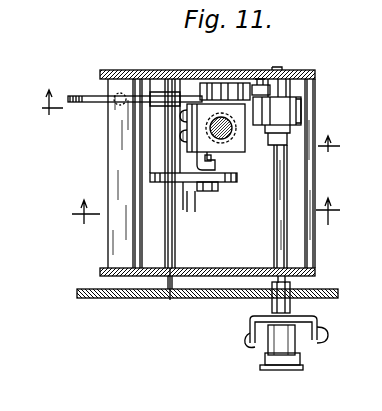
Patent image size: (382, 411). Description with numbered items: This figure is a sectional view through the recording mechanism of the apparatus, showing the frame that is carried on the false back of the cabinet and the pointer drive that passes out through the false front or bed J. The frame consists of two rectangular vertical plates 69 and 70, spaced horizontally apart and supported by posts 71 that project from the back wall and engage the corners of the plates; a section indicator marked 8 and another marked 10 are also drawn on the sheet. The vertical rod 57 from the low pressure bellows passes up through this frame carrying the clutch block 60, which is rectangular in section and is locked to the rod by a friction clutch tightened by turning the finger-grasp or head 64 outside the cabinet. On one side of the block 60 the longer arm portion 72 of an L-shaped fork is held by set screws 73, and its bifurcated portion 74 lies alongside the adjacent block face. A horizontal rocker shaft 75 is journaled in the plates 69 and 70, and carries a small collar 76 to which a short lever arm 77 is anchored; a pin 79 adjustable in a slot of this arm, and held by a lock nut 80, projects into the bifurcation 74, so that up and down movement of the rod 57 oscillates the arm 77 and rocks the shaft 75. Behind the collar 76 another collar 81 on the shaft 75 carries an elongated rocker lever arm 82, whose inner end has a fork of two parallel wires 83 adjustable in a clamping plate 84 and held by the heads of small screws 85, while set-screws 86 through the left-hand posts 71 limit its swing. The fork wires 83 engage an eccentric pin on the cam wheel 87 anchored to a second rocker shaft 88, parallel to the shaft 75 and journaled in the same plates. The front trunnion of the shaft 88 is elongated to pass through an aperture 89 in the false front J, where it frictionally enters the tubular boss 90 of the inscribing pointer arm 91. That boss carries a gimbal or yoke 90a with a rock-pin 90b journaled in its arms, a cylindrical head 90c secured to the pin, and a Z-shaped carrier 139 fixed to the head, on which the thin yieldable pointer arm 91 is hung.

The rear vertical plate 70 is at (123, 62).
The front vertical plate 69 is at (222, 277).
The false front or bed J is at (121, 300).
The posts 71 is at (114, 254).
The longer arm portion of L-shaped fork 72 is at (157, 167).
The set screws 73 is at (132, 118).
The collar 76 is at (153, 172).
The bifurcated portion of fork 74 is at (210, 192).
The short lever arm 77 is at (180, 182).
The lock nut 80 is at (188, 192).
The pin 79 is at (196, 192).
The rod 57 is at (217, 165).
The finger-grasp or head 64 is at (243, 139).
The clutch block 60 is at (236, 134).
The rocker lever arm 82 is at (80, 96).
The collar 81 is at (158, 143).
The screws 85 is at (207, 83).
The clamping plate 84 is at (233, 84).
The fork wires 83 is at (260, 83).
The set-screws 86 is at (290, 68).
The cam wheel 87 is at (301, 100).
The rocker shaft 88 is at (280, 188).
The rocker shaft 75 is at (170, 299).
The tubular boss 90 is at (271, 302).
The aperture 89 is at (294, 302).
The gimbal or yoke 90a is at (320, 328).
The rock-pin 90b is at (252, 338).
The cylindrical block or head 90c is at (290, 362).
The Z-shaped carrier 139 is at (301, 358).
The inscribing pointer arm 91 is at (264, 372).
The section line 10- 10 is at (182, 121).
The section line 8- 8 is at (201, 212).